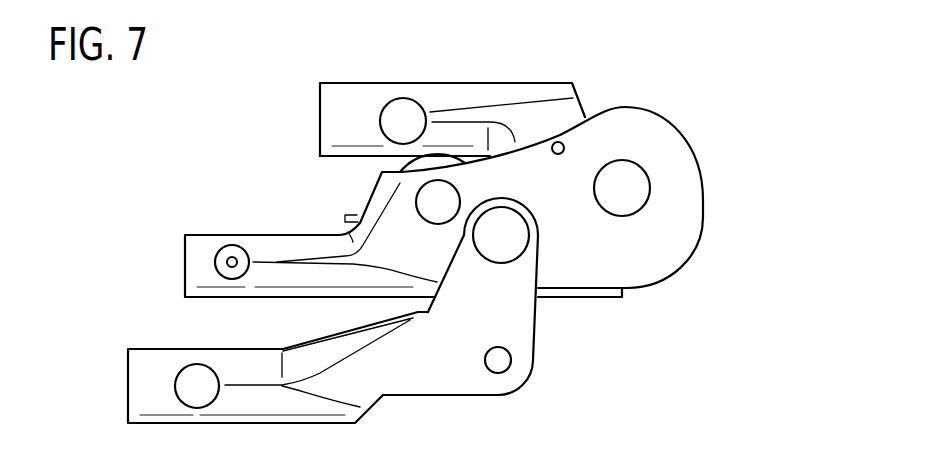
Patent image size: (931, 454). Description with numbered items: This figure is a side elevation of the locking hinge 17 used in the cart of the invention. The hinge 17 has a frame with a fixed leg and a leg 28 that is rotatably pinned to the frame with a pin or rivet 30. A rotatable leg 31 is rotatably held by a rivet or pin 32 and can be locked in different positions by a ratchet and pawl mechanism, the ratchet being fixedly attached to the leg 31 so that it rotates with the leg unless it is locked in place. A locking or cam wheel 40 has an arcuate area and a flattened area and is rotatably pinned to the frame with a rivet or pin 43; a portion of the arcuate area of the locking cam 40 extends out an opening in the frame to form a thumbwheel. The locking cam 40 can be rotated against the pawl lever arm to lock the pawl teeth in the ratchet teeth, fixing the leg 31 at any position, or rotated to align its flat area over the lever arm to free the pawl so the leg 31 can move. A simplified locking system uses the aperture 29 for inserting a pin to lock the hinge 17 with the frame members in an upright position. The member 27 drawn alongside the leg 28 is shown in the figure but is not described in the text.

The bracket plate 17 is at (717, 71).
The first mounting bar 27 is at (203, 253).
The second mounting bar 28 is at (150, 375).
The small pin hole 29 is at (564, 145).
The pivot link arm 30 is at (502, 235).
The upper mounting block 31 is at (338, 103).
The plate hole 32 is at (632, 185).
The boss 40 is at (434, 165).
The boss hole 43 is at (440, 202).